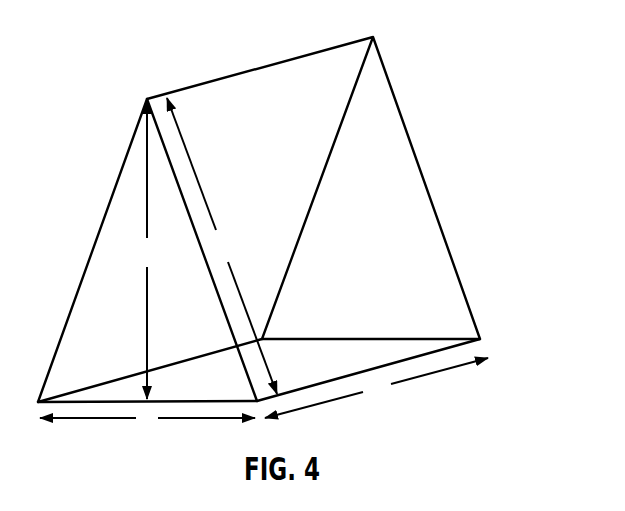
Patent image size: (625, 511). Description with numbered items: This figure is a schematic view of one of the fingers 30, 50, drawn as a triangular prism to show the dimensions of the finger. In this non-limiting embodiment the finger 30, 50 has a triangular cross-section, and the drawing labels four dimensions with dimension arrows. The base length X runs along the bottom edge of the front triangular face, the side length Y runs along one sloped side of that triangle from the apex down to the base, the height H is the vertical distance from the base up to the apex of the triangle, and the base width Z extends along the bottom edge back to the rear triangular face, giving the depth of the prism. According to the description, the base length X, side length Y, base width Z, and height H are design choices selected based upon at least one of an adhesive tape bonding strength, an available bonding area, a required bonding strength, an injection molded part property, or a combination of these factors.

The finger 30 is at (305, 219).
The finger 50 is at (463, 233).
The height H is at (147, 250).
The base length X is at (147, 418).
The side length Y is at (222, 246).
The base width Z is at (376, 388).